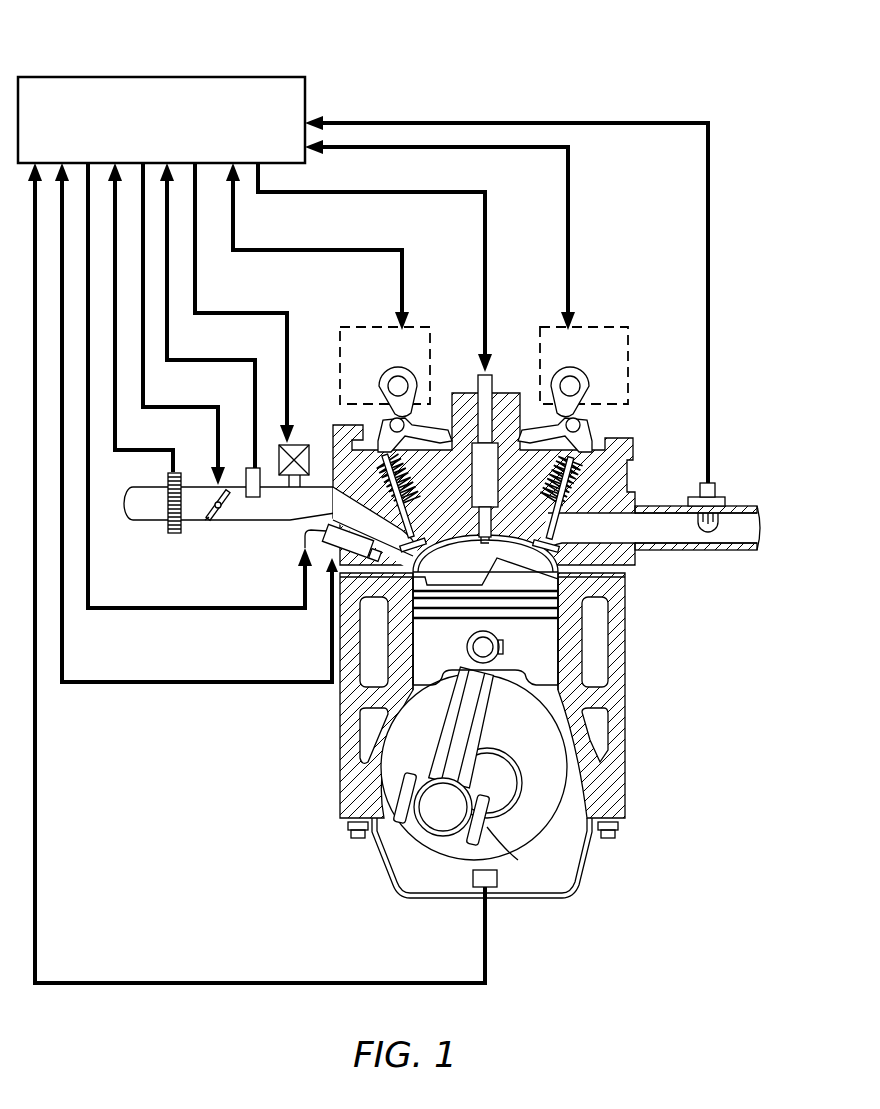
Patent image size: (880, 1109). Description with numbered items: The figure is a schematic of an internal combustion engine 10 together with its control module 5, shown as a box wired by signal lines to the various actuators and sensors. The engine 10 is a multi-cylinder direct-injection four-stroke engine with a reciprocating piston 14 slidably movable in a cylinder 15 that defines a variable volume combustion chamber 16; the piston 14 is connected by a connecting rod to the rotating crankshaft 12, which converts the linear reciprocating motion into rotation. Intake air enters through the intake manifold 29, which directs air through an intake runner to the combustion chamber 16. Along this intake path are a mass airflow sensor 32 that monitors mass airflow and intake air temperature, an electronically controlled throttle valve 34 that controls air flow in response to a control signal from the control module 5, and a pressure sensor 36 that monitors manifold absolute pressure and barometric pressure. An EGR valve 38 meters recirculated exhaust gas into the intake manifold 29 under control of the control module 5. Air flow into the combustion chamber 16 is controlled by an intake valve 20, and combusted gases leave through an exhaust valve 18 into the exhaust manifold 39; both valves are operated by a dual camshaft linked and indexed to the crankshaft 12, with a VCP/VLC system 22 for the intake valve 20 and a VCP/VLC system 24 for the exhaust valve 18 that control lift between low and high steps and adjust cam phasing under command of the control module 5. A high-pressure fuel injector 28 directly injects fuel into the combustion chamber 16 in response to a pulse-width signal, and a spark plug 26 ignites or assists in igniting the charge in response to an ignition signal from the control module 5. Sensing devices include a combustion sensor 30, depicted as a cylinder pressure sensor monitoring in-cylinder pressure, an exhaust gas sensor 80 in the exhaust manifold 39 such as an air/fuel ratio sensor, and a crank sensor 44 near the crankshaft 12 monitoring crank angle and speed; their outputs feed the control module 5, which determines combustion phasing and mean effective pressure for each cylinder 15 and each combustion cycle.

The control module 5 is at (262, 76).
The internal combustion engine 10 is at (630, 695).
The crankshaft 12 is at (548, 838).
The piston 14 is at (539, 658).
The cylinder 15 is at (562, 585).
The combustion chamber 16 is at (463, 578).
The exhaust valve 18 is at (551, 546).
The intake valve 20 is at (396, 521).
The VCP/VLC system for the intake valves 22 is at (424, 333).
The VCP/VLC system for the exhaust valves 24 is at (616, 384).
The spark plug 26 is at (488, 376).
The fuel injector 28 is at (304, 541).
The intake manifold 29 is at (318, 487).
The combustion sensor 30 is at (328, 570).
The mass airflow sensor 32 is at (168, 531).
The throttle valve 34 is at (212, 519).
The pressure sensor 36 is at (253, 498).
The EGR valve 38 is at (287, 477).
The exhaust manifold 39 is at (618, 524).
The crank sensor 44 is at (478, 884).
The exhaust gas sensor 80 is at (712, 496).